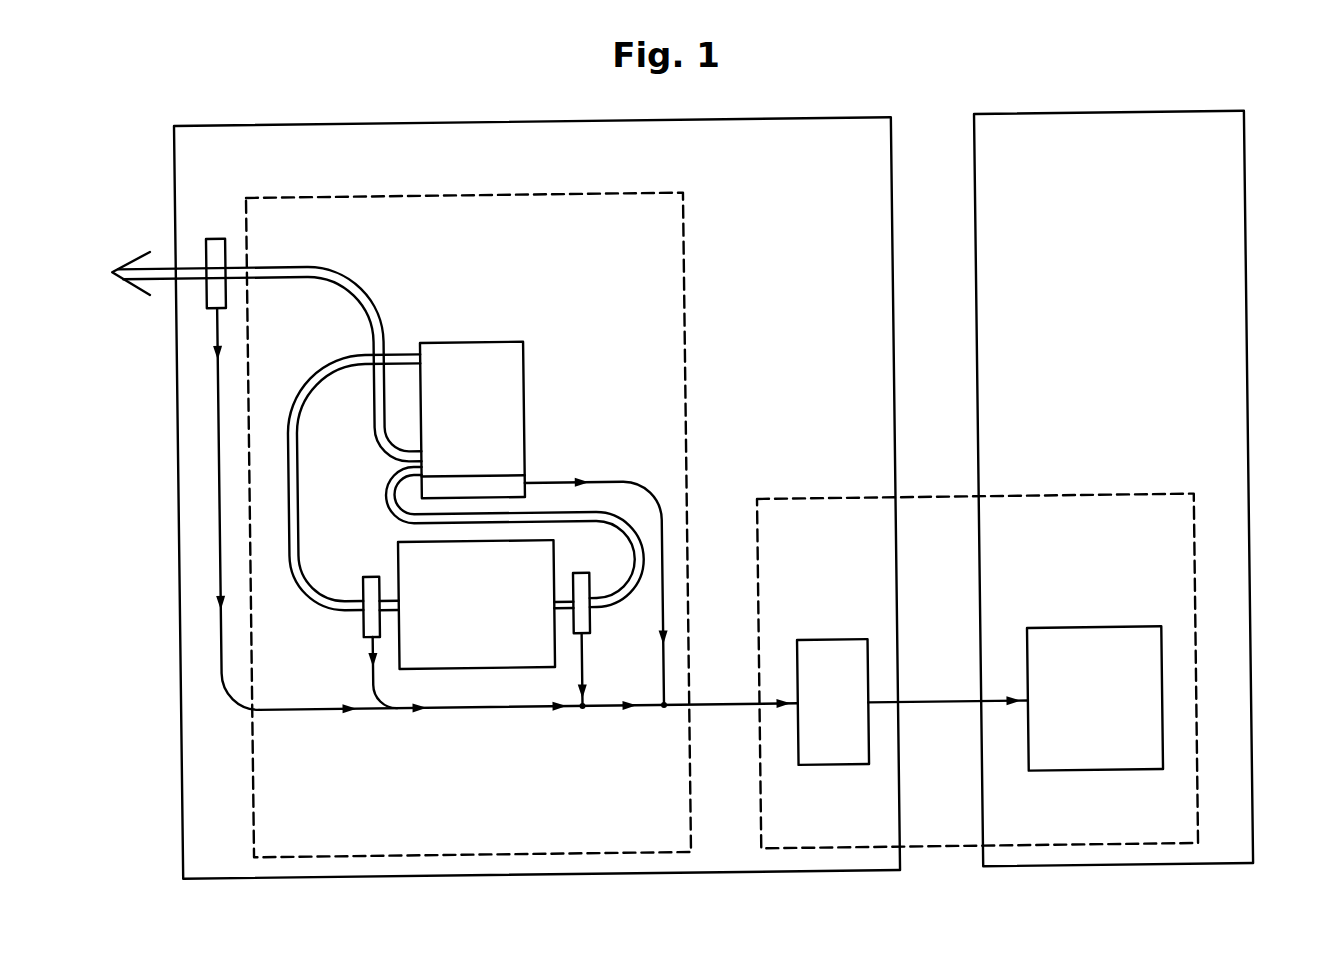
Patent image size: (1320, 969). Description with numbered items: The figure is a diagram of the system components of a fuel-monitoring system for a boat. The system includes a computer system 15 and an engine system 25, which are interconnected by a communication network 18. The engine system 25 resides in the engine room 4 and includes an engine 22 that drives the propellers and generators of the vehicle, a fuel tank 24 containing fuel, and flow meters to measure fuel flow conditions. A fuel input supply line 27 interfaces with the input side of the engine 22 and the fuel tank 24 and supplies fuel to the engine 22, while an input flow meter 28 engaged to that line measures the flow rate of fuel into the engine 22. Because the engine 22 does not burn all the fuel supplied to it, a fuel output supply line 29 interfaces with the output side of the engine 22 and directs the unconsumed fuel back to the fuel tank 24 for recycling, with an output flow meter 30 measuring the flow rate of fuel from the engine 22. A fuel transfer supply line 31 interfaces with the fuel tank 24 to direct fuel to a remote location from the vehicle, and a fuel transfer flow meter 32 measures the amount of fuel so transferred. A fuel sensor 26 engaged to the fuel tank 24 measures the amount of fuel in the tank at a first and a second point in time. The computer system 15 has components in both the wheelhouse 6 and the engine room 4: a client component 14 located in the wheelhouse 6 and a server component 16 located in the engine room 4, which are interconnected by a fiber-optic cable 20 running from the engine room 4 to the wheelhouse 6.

The engine room 4 is at (827, 120).
The wheelhouse 6 is at (1212, 120).
The client component 14 is at (1071, 634).
The computer system 15 is at (1130, 494).
The server component 16 is at (815, 769).
The communication network 18 is at (650, 496).
The fiber-optic cable 20 is at (950, 708).
The engine 22 is at (508, 667).
The fuel tank 24 is at (482, 342).
The engine system 25 is at (647, 183).
The fuel sensor 26 is at (482, 483).
The fuel input supply line 27 is at (385, 485).
The input flow meter 28 is at (591, 619).
The fuel output supply line 29 is at (334, 360).
The output flow meter 30 is at (362, 625).
The fuel transfer supply line 31 is at (353, 263).
The fuel transfer flow meter 32 is at (218, 234).